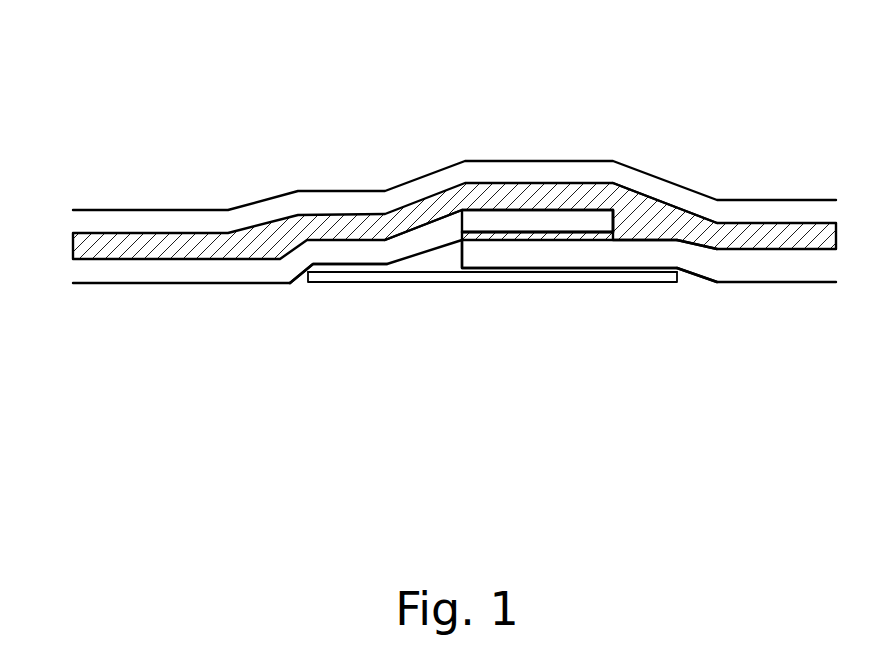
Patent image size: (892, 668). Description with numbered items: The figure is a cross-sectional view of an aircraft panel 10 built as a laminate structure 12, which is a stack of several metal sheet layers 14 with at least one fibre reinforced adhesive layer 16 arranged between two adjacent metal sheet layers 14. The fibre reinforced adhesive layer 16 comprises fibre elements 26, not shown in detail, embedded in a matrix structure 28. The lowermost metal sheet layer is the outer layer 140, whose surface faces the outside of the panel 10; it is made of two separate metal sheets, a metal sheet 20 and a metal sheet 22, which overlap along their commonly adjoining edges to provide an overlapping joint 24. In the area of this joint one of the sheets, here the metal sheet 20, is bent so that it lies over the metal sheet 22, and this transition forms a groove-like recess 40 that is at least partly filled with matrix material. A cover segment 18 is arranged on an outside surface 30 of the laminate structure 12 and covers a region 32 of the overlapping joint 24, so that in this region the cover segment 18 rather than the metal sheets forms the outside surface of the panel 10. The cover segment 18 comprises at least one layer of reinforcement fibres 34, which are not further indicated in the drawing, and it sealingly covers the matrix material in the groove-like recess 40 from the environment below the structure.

The aircraft panel 10 is at (409, 98).
The laminate structure 12 is at (53, 210).
The metal sheet layers 14 is at (100, 218).
The outer layer 140 is at (213, 290).
The fibre reinforced adhesive layer 16 is at (152, 226).
The cover segment 18 is at (390, 305).
The metal sheet 20 is at (527, 220).
The metal sheet 22 is at (700, 259).
The overlapping joint 24 is at (569, 215).
The fibre elements 26 is at (648, 218).
The matrix structure 28 is at (685, 223).
The outside surface 30 is at (311, 332).
The region 32 is at (423, 472).
The layer of reinforcement fibres 34 is at (433, 277).
The groove-like recess 40 is at (443, 258).